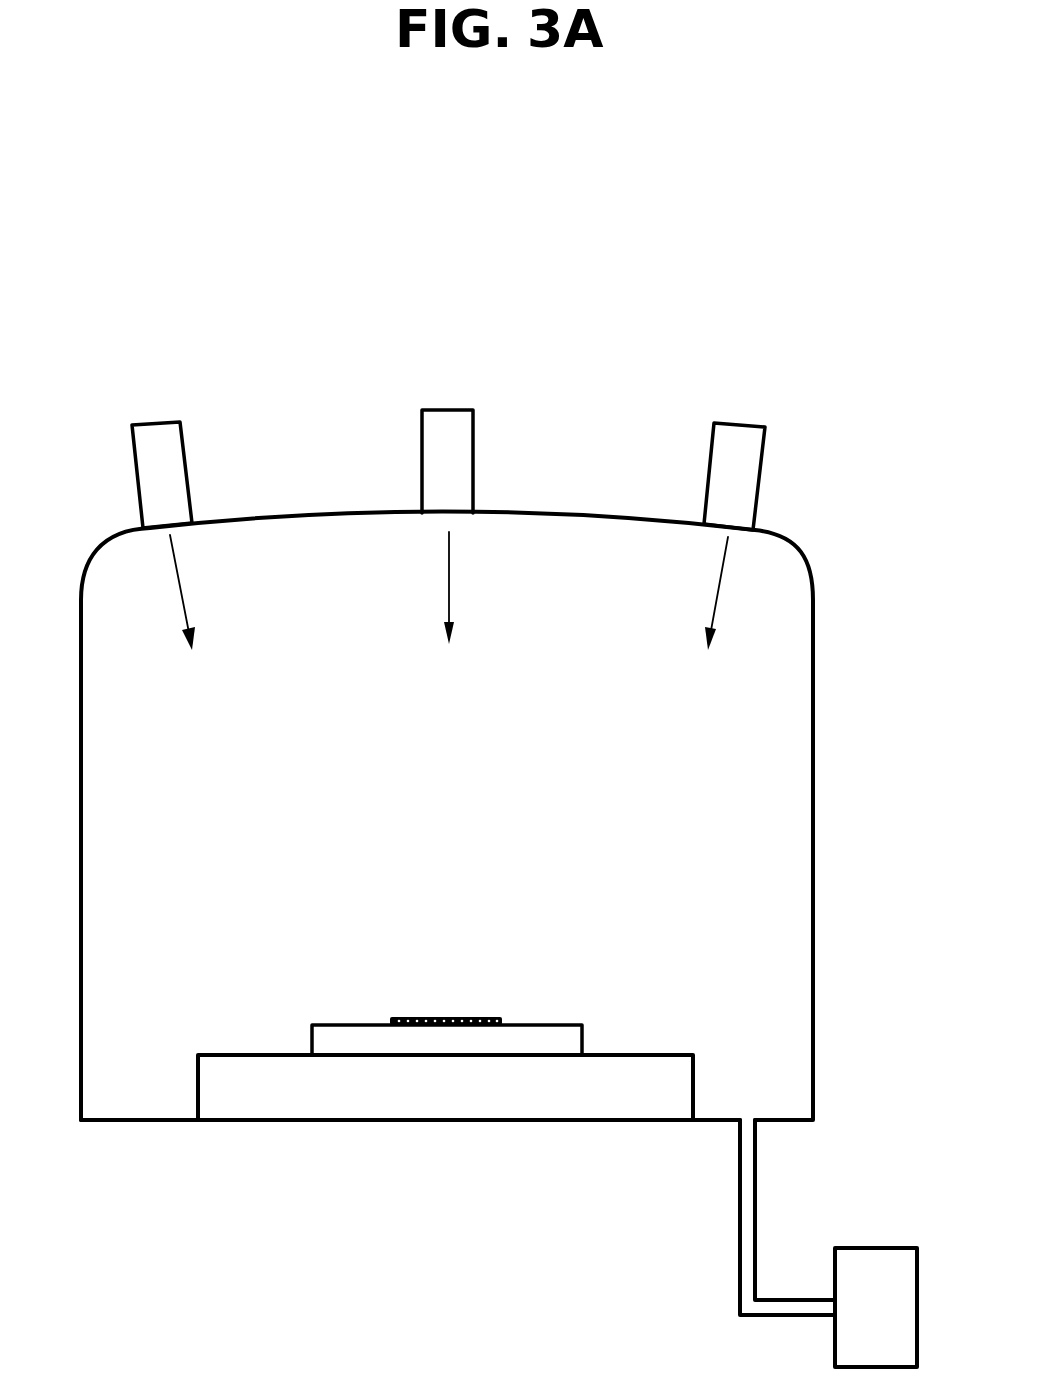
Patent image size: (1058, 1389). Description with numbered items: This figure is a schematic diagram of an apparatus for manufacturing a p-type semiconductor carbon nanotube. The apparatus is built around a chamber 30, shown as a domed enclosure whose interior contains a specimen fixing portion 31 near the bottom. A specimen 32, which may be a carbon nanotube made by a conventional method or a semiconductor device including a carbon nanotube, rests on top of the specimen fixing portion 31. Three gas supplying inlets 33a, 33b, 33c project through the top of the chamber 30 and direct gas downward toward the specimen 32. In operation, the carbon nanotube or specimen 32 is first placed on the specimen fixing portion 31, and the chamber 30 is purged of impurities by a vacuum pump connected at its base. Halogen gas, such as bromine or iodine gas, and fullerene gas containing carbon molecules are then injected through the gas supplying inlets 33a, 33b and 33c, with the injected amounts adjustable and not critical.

The chamber 30 is at (813, 884).
The specimen fixing portion 31 is at (327, 1023).
The specimen 32 is at (452, 1015).
The gas supplying inlet 33a is at (157, 433).
The gas supplying inlet 33b is at (447, 415).
The gas supplying inlet 33c is at (742, 430).